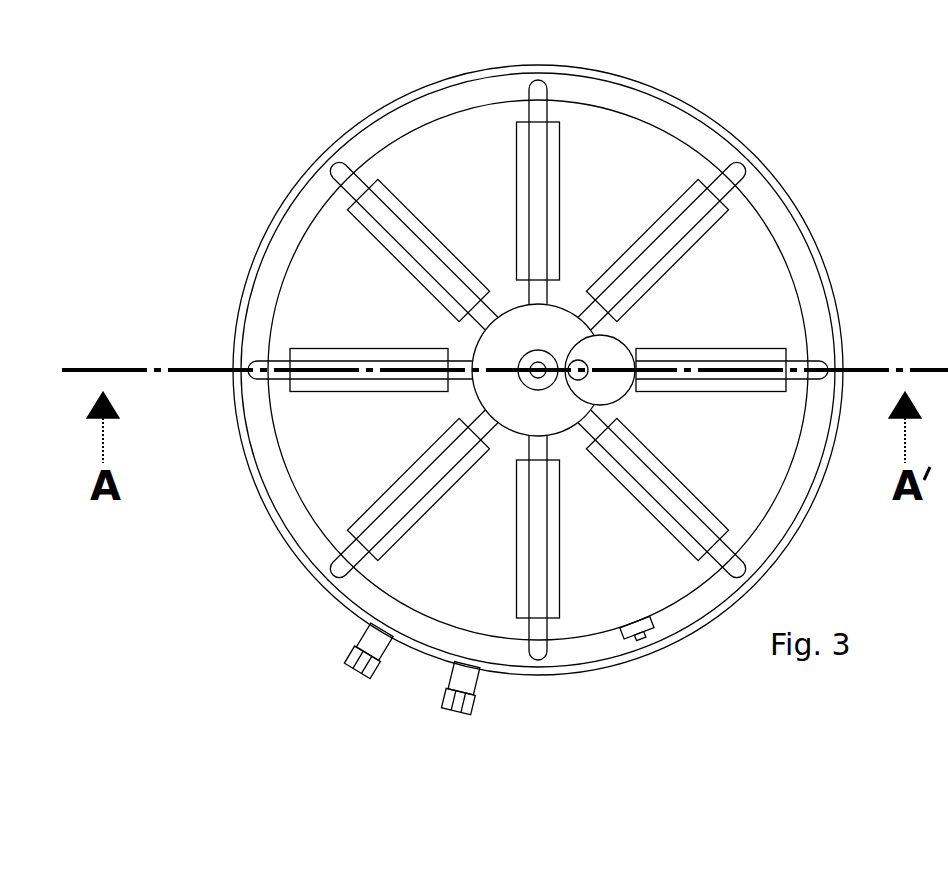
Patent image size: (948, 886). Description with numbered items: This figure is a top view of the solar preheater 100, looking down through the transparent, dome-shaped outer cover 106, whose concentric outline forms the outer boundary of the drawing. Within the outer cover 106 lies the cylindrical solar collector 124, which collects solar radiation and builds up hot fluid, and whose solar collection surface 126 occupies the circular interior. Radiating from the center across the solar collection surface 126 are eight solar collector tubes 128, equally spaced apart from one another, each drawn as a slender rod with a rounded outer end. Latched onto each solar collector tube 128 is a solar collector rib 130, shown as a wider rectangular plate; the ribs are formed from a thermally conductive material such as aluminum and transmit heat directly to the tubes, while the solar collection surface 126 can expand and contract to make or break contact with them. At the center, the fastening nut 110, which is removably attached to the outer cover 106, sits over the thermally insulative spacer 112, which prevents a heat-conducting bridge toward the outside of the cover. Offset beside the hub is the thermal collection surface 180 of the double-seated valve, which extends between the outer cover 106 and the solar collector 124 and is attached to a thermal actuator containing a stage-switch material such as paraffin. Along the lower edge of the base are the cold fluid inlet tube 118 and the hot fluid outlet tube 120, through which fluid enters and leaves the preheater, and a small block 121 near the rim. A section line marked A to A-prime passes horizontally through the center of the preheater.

The solar preheater 100 is at (258, 178).
The outer cover 106 is at (668, 76).
The fastening nut 110 is at (531, 348).
The spacer 112 is at (481, 349).
The cold fluid inlet tube 118 is at (452, 727).
The hot fluid outlet tube 120 is at (353, 675).
The sensor 121 is at (638, 642).
The solar collector 124 is at (672, 147).
The solar collection surface 126 is at (580, 370).
The solar collector tube 128 is at (755, 163).
The solar collector rib 130 is at (724, 208).
The thermal collection surface 180 is at (631, 396).